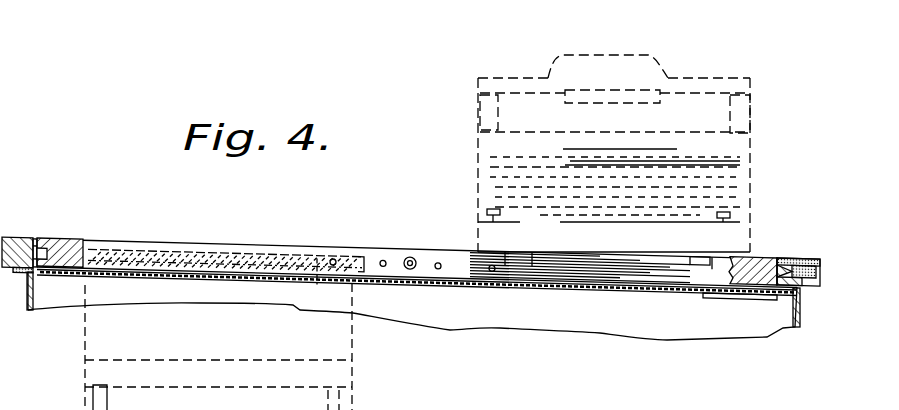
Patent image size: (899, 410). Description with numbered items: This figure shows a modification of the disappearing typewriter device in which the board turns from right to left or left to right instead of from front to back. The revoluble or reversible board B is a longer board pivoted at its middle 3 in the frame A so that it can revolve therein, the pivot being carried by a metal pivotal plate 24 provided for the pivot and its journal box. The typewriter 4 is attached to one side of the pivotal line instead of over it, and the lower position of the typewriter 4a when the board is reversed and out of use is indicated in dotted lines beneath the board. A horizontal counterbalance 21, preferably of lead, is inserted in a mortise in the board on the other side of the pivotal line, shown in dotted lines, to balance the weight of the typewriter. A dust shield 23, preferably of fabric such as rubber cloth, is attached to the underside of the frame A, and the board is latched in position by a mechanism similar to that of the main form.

The frame A is at (23, 236).
The horizontal counterbalance 21 is at (178, 252).
The middle pivot 3 is at (418, 256).
The metal pivotal plate 24 is at (458, 279).
The dust shield 23 is at (507, 323).
The revoluble or reversible board B is at (603, 286).
The typewriter 4 is at (614, 153).
The typewriter base 4a is at (218, 346).